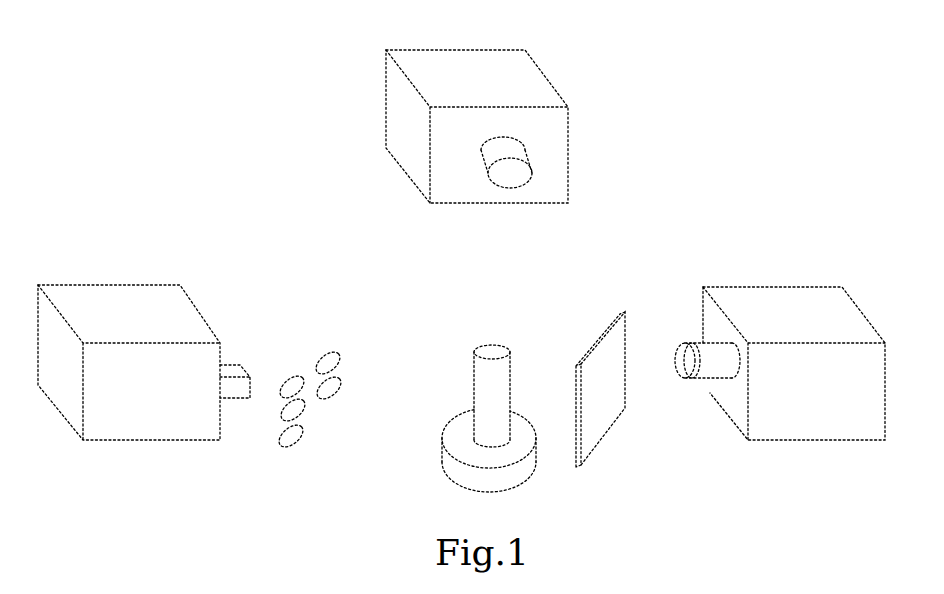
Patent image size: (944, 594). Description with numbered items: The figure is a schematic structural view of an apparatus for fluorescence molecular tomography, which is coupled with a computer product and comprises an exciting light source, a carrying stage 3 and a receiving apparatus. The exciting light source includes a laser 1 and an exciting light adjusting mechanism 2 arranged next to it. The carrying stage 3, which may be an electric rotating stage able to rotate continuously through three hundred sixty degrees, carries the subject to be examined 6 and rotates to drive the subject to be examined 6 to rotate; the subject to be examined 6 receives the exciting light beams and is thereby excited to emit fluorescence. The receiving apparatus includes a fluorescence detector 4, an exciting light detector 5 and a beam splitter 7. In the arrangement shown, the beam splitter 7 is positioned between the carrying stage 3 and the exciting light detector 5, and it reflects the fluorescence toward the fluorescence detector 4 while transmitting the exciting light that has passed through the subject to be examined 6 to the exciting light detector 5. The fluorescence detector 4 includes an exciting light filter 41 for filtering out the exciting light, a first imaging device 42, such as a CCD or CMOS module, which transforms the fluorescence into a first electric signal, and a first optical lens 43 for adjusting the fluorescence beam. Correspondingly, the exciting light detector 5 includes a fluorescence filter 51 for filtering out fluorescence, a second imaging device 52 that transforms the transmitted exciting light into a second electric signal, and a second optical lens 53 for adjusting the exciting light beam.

The laser 1 is at (120, 295).
The exciting light adjusting mechanism 2 is at (300, 356).
The carrying stage 3 is at (502, 480).
The fluorescence detector 4 is at (487, 117).
The exciting light filter 41 is at (512, 182).
The first imaging device 42 is at (540, 90).
The first optical lens 43 is at (490, 152).
The exciting light detector 5 is at (768, 342).
The fluorescence filter 51 is at (683, 377).
The second imaging device 52 is at (733, 400).
The second optical lens 53 is at (708, 380).
The subject to be examined 6 is at (492, 358).
The beam splitter 7 is at (605, 350).